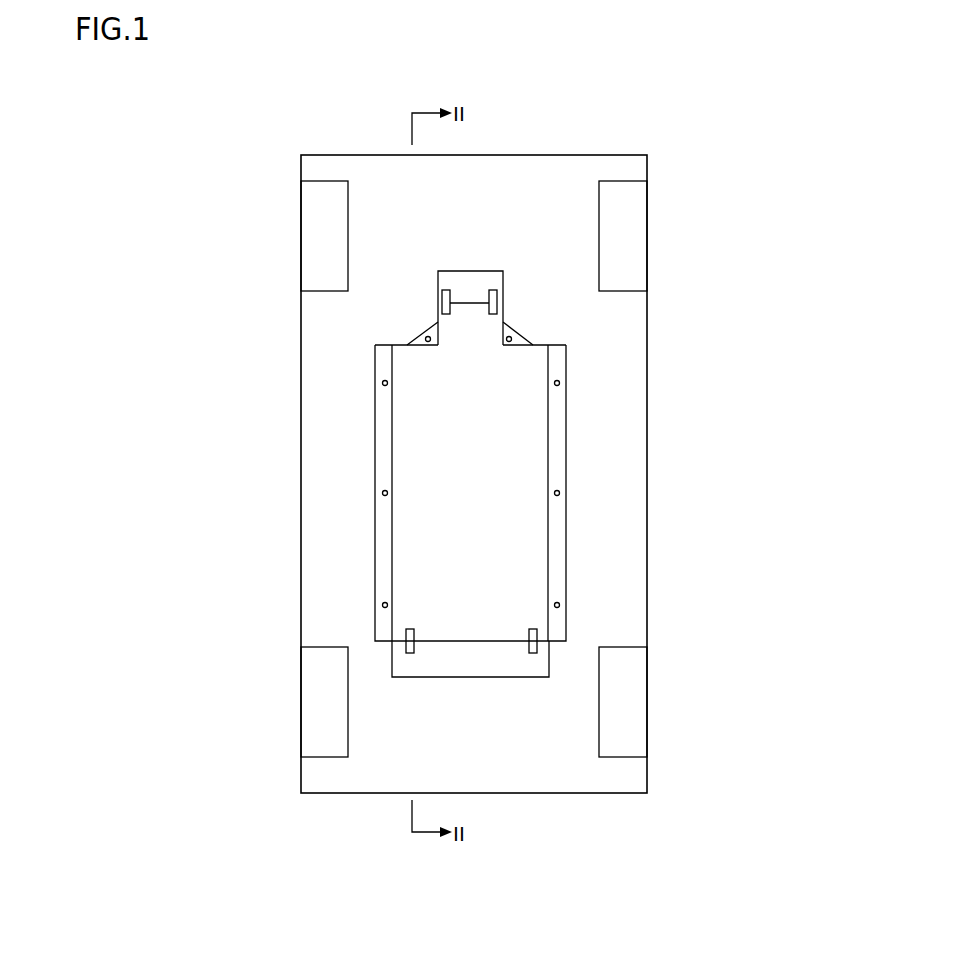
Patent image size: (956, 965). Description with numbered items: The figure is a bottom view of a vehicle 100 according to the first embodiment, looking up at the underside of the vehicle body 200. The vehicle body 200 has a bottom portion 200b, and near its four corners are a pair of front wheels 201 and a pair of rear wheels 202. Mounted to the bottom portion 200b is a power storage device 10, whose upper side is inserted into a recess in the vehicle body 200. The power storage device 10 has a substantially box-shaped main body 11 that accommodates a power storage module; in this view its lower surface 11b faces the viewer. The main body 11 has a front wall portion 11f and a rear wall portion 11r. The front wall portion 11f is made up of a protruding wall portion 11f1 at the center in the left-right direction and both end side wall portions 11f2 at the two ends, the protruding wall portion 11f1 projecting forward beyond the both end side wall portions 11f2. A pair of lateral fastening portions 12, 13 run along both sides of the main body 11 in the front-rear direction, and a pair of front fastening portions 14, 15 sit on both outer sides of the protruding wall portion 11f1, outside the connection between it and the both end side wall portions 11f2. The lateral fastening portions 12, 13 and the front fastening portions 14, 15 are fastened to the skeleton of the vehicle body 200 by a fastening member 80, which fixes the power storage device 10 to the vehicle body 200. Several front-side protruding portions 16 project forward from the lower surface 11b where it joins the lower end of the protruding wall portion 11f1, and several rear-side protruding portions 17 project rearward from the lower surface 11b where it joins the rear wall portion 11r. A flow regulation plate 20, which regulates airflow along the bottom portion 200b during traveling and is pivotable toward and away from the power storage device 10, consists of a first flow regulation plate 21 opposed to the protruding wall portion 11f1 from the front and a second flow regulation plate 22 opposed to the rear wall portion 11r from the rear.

The vehicle 100 is at (761, 126).
The vehicle body 200 is at (650, 394).
The bottom portion 200b is at (577, 317).
The front wheels 201 is at (312, 246).
The rear wheels 202 is at (312, 708).
The power storage device 10 is at (582, 546).
The main body 11 is at (539, 337).
The lower surface 11b is at (432, 509).
The rear wall portion 11r is at (467, 642).
The front wall portion 11f is at (461, 267).
The protruding wall portion 11f1 is at (462, 302).
The both end side wall portions 11f2 is at (402, 343).
The lateral fastening portion 12 is at (375, 464).
The lateral fastening portion 13 is at (567, 463).
The front fastening portion 14 is at (422, 336).
The front fastening portion 15 is at (520, 338).
The front-side protruding portion 16 is at (492, 290).
The rear-side protruding portion 17 is at (410, 653).
The flow regulation plate 20 is at (467, 473).
The first flow regulation plate 21 is at (474, 270).
The second flow regulation plate 22 is at (522, 677).
The fastening member 80 is at (562, 384).